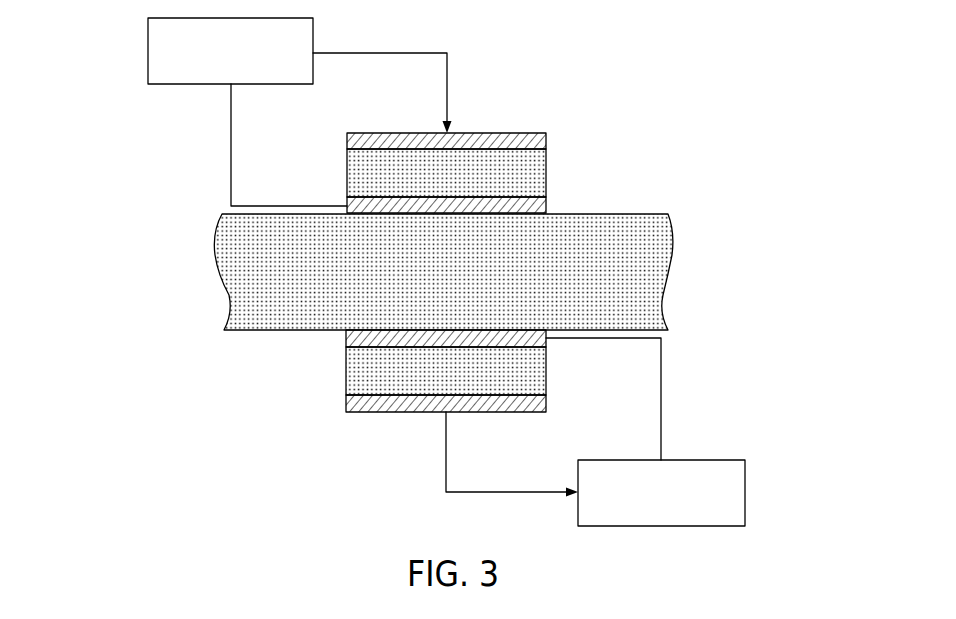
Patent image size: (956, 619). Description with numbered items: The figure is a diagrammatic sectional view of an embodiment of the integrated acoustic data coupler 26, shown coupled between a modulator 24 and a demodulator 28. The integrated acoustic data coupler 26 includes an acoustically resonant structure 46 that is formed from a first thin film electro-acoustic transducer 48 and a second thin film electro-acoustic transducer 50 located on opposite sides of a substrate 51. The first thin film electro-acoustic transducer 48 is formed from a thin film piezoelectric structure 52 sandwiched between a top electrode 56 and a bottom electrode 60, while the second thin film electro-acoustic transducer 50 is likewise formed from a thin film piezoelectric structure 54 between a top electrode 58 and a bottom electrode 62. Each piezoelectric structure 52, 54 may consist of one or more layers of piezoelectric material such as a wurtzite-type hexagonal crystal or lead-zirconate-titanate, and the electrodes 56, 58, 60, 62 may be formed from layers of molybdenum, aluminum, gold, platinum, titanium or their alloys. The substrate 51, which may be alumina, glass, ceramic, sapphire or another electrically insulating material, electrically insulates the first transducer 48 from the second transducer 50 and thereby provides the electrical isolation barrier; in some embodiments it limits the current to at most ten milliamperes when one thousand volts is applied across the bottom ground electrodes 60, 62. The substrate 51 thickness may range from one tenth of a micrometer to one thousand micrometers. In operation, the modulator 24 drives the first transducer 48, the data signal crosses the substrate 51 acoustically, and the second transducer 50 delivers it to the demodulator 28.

The modulator 24 is at (147, 52).
The integrated acoustic data coupler 26 is at (763, 82).
The demodulator 28 is at (748, 493).
The acoustically resonant structure 46 is at (747, 410).
The first thin film electro-acoustic transducer 48 is at (628, 213).
The second thin film electro-acoustic transducer 50 is at (262, 332).
The substrate 51 is at (678, 293).
The thin film piezoelectric structure 52 is at (549, 172).
The thin film piezoelectric structure 54 is at (345, 372).
The top electrode 56 is at (549, 140).
The top electrode 58 is at (345, 401).
The bottom electrode 60 is at (549, 205).
The bottom electrode 62 is at (345, 337).